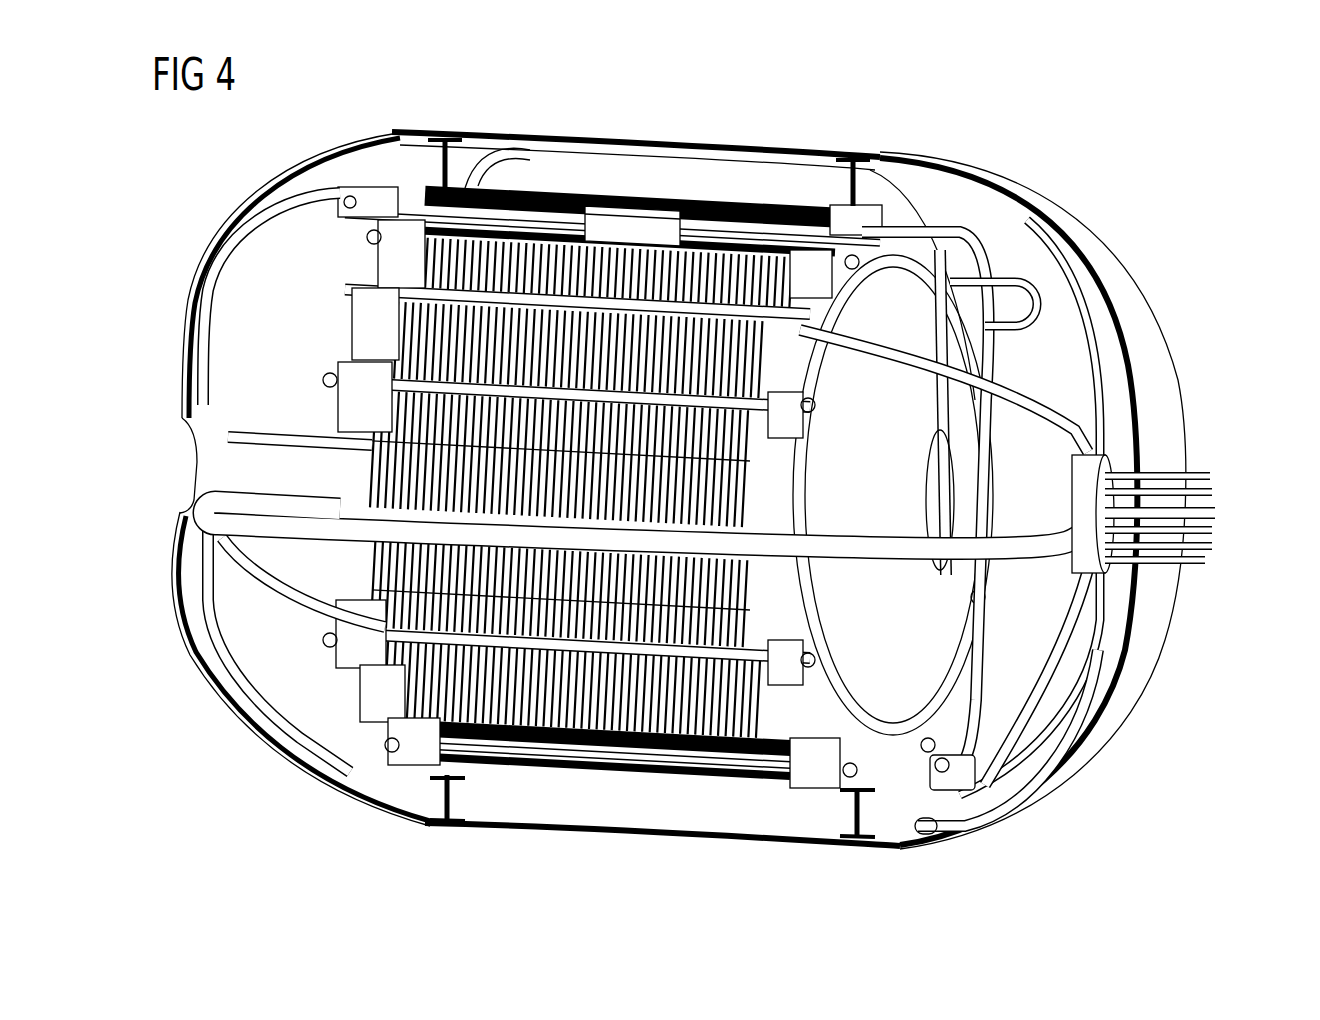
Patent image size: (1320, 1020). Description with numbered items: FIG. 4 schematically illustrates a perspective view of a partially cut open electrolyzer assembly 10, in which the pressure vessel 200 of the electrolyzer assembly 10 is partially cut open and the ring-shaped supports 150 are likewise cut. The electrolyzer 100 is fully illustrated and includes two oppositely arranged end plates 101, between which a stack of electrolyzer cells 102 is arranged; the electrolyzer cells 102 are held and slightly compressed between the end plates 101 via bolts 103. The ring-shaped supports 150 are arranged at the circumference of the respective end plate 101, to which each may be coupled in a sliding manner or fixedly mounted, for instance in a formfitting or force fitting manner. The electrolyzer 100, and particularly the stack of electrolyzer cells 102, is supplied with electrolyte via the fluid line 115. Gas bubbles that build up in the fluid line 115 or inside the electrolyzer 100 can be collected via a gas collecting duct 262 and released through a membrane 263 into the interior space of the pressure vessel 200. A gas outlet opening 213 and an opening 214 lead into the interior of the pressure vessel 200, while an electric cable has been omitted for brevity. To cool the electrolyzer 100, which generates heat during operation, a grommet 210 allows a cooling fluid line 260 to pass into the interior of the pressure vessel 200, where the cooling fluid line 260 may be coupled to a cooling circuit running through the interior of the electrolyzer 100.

The electrolyzer assembly 10 is at (205, 184).
The electrolyzer 100 is at (776, 184).
The end plate 101 is at (412, 757).
The electrolyzer cells 102 is at (683, 777).
The bolts 103 is at (587, 757).
The fluid line 115 is at (1102, 332).
The ring-shaped support 150 is at (447, 172).
The pressure vessel 200 is at (692, 128).
The grommet 210 is at (1097, 498).
The gas outlet opening 213 is at (968, 824).
The opening 214 is at (937, 828).
The cooling fluid line 260 is at (1012, 548).
The gas collecting duct 262 is at (515, 212).
The membrane 263 is at (612, 212).